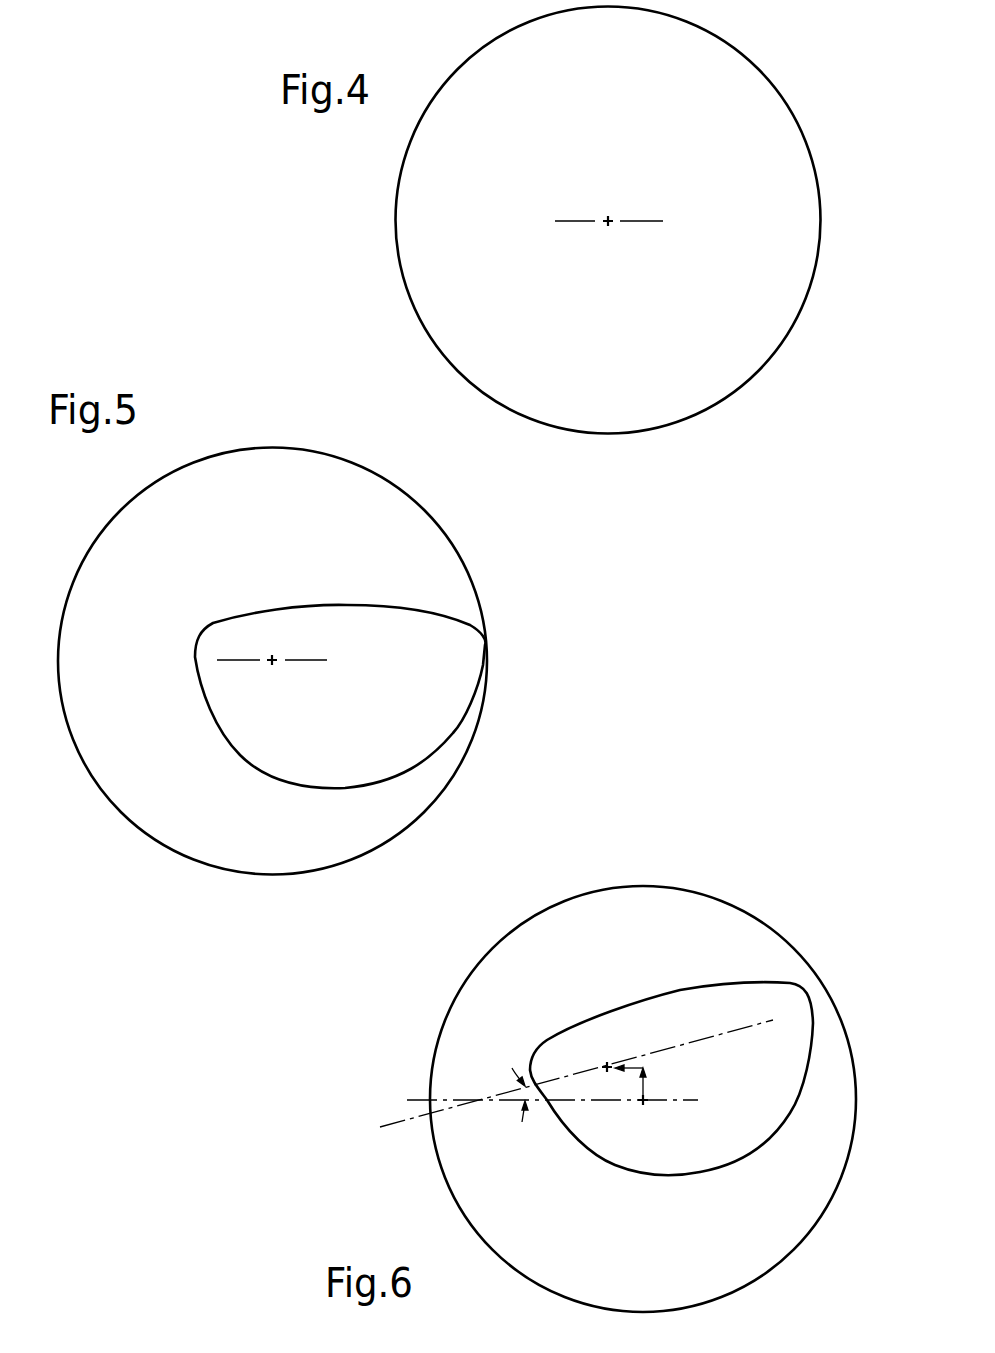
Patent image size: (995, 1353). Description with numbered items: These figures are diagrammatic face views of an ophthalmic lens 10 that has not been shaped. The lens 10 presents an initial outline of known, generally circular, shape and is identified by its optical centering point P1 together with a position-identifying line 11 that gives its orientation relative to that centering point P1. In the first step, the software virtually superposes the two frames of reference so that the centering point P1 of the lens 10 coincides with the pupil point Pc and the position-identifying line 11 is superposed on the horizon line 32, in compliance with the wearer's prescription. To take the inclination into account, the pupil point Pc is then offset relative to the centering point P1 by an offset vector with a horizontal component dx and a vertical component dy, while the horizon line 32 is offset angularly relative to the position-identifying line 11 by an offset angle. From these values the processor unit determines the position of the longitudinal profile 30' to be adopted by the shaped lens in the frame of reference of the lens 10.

In FIG. 4, the ophthalmic lens 10 is at (738, 51).
In FIG. 5, the ophthalmic lens 10 is at (273, 448).
In FIG. 6, the ophthalmic lens 10 is at (740, 907).
In FIG. 4, the position-identifying line 11 is at (642, 222).
In FIG. 5, the position-identifying line 11 is at (315, 660).
In FIG. 6, the position-identifying line 11 is at (681, 1102).
In FIG. 5, the horizon line 32 is at (340, 696).
In FIG. 6, the horizon line 32 is at (722, 1031).
In FIG. 6, the longitudinal profile 30' is at (679, 1036).
In FIG. 4, the optical centering point P1 is at (607, 217).
In FIG. 5, the optical centering point P1 is at (272, 667).
In FIG. 6, the optical centering point P1 is at (648, 1117).
In FIG. 6, the pupil point Pc is at (603, 1065).
In FIG. 6, the horizontal component dx is at (628, 1067).
In FIG. 6, the vertical component dy is at (647, 1081).